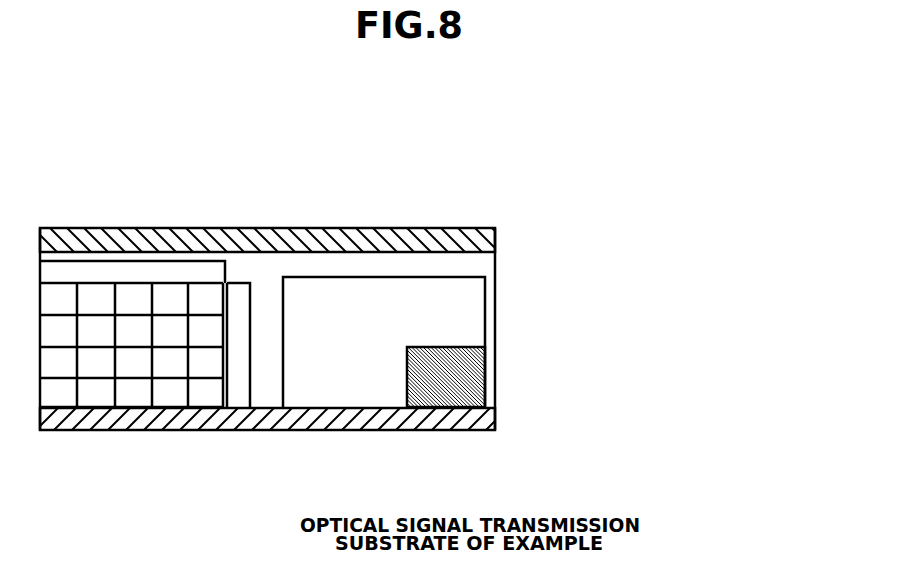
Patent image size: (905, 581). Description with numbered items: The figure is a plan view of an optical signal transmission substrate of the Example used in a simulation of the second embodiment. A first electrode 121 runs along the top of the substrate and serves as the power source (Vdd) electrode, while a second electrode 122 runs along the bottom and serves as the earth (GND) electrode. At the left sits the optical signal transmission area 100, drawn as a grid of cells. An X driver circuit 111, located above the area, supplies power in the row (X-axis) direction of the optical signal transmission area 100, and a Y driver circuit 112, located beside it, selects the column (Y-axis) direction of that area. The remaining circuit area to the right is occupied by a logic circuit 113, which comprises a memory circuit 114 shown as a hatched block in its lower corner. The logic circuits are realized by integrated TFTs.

The optical signal transmission area 100 is at (91, 293).
The X driver circuit 111 is at (144, 272).
The Y driver circuit 112 is at (238, 308).
The logic circuit 113 is at (352, 372).
The memory circuit 114 is at (485, 370).
The first electrode 121 is at (495, 232).
The second electrode 122 is at (495, 420).